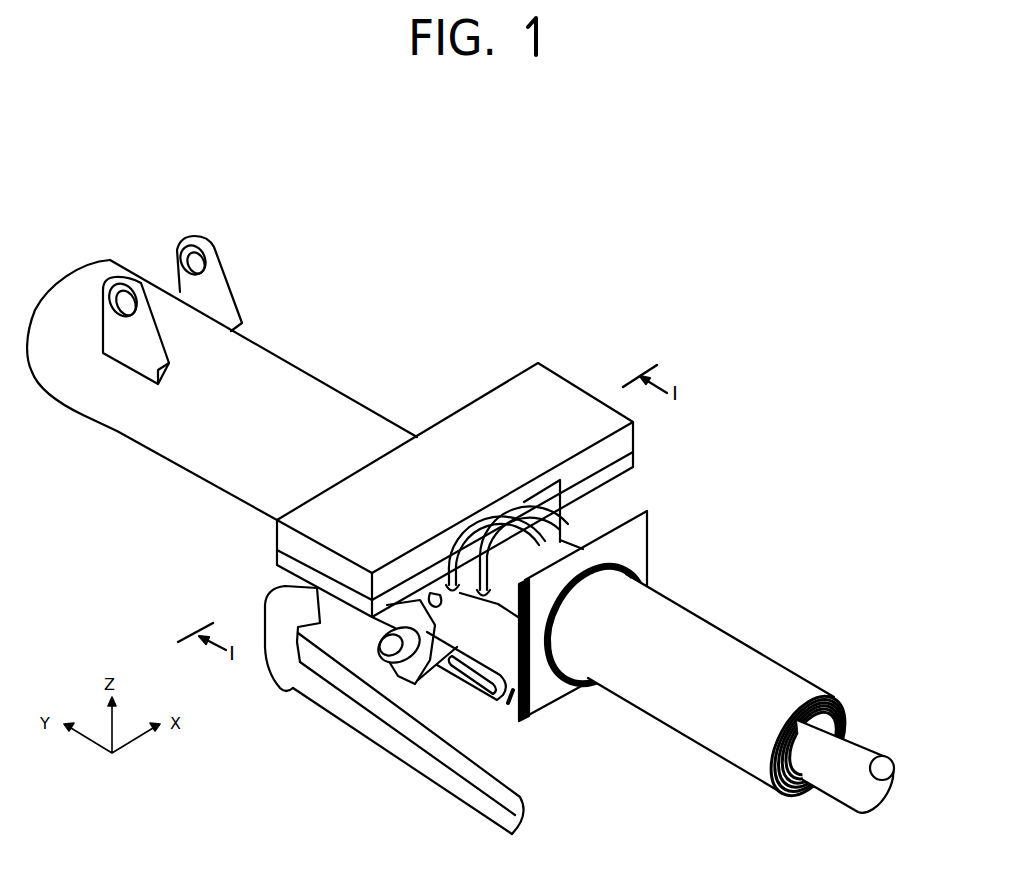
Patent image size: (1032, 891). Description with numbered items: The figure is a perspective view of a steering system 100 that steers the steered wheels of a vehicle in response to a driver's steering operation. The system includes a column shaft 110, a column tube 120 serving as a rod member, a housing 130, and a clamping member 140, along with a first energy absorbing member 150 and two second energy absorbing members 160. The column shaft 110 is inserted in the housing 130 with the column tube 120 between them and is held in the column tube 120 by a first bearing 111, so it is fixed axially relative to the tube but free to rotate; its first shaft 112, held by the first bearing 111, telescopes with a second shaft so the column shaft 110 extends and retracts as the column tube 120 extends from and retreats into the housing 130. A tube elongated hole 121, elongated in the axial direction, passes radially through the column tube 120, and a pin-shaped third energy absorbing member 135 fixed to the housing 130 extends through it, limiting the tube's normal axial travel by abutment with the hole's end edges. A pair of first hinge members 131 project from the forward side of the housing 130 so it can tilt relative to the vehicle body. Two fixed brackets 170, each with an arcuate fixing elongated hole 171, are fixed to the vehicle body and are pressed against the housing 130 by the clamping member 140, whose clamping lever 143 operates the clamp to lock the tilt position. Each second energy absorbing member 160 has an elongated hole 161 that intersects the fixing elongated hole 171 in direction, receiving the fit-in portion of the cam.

The steering system 100 is at (728, 254).
The column shaft 110 is at (867, 737).
The first bearing 111 is at (793, 797).
The first shaft 112 is at (843, 797).
The column tube 120 is at (742, 653).
The tube elongated hole 121 is at (481, 555).
The housing 130 is at (390, 374).
The first hinge members 131 is at (183, 243).
The third energy absorbing member 135 is at (435, 565).
The clamping member 140 is at (392, 650).
The clamping lever 143 is at (410, 772).
The first energy absorbing member 150 is at (650, 563).
The second energy absorbing members 160 is at (503, 703).
The elongated hole 161 is at (478, 699).
The fixing brackets 170 is at (277, 552).
The fixing elongated hole 171 is at (376, 651).